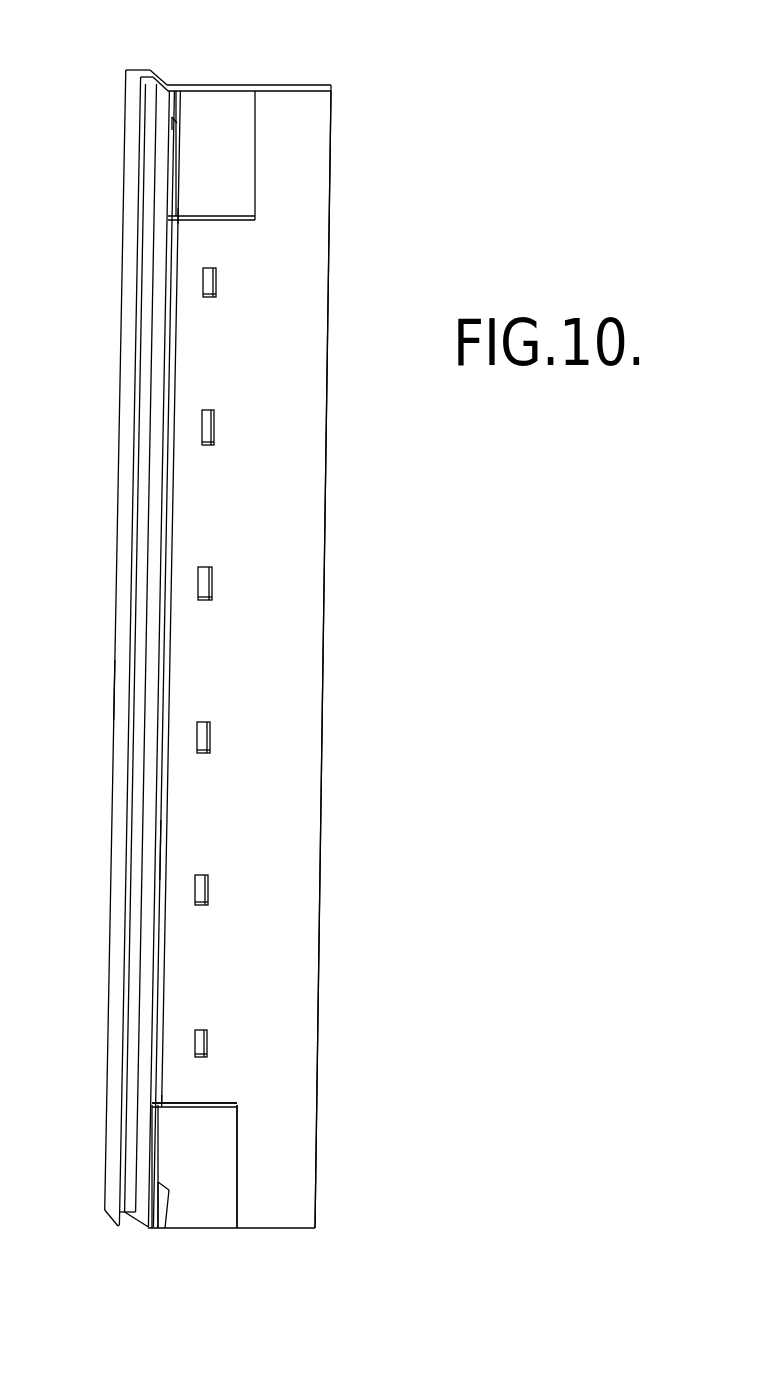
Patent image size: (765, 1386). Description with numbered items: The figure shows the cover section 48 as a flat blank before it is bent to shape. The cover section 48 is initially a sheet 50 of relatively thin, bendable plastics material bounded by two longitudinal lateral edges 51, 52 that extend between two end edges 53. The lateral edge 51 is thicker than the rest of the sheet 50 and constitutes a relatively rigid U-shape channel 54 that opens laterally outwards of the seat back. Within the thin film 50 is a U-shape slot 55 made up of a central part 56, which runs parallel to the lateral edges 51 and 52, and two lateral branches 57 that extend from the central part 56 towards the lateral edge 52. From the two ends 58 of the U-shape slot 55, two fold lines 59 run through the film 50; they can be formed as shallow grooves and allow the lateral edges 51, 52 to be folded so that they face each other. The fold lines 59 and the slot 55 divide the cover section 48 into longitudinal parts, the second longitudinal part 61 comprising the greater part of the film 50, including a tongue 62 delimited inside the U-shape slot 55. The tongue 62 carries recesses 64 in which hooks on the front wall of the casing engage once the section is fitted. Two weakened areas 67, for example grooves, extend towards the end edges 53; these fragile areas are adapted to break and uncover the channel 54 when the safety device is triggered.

The cover section 48 is at (218, 1246).
The sheet 50 is at (302, 730).
The lateral edge 51 is at (118, 518).
The lateral edge 52 is at (322, 658).
The end edges 53 is at (288, 84).
The U-shape channel 54 is at (103, 691).
The U-shape slot 55 is at (172, 851).
The central part 56 is at (176, 318).
The lateral branches 57 is at (220, 222).
The ends 58 is at (255, 217).
The fold lines 59 is at (255, 165).
The second longitudinal part 61 is at (302, 562).
The tongue 62 is at (205, 483).
The recesses 64 is at (215, 412).
The weakened areas 67 is at (173, 126).